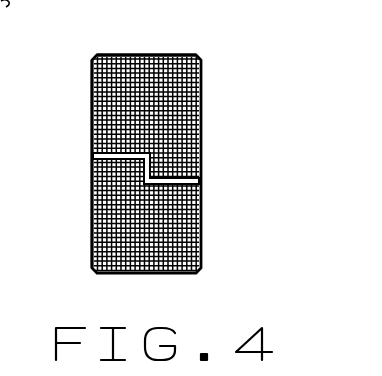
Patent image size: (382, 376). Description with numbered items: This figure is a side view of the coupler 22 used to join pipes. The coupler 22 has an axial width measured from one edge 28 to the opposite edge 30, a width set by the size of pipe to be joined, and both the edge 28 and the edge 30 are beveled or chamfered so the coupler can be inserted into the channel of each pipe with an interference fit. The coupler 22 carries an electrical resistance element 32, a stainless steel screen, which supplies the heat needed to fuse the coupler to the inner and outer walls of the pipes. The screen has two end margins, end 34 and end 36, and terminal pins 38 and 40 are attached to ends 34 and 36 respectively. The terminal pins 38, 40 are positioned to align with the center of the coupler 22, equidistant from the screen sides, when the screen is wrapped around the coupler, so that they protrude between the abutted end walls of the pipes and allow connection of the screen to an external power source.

The coupler 22 is at (144, 44).
The edge 28 is at (212, 96).
The edge 30 is at (80, 100).
The electrical resistance element 32 is at (191, 223).
The end margin 34 is at (214, 189).
The end margin 36 is at (215, 169).
The terminal pin 38 is at (135, 167).
The terminal pin 40 is at (148, 192).